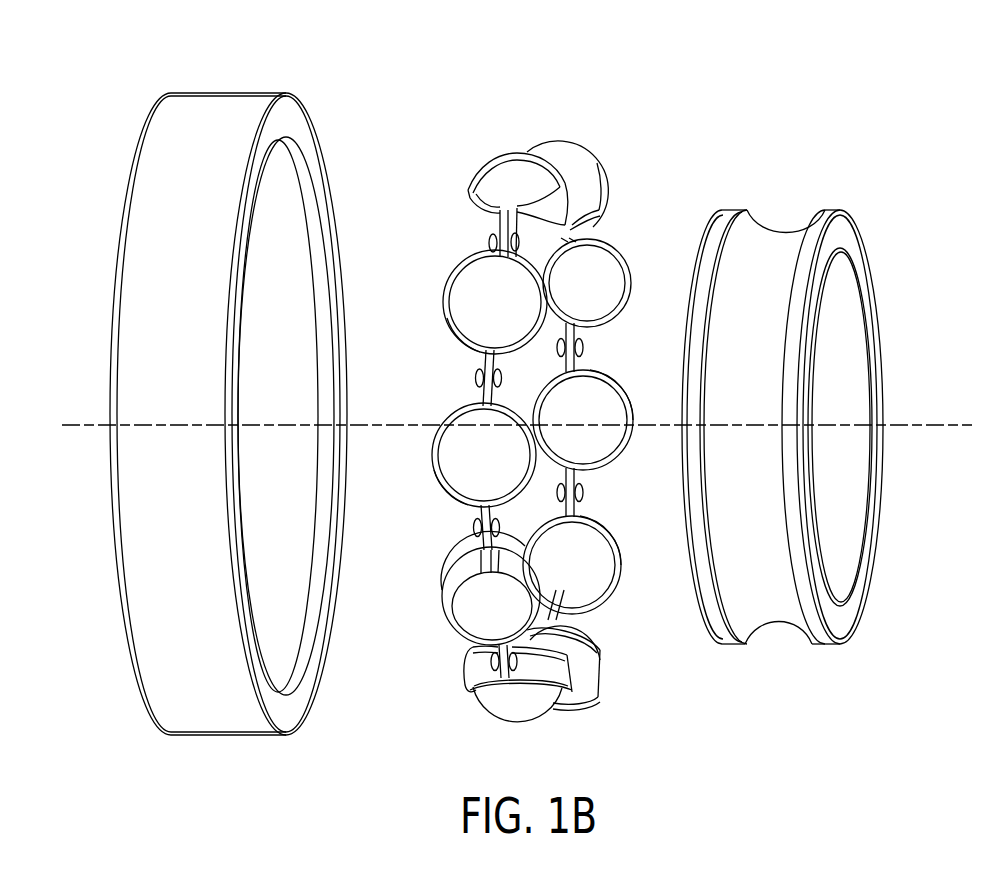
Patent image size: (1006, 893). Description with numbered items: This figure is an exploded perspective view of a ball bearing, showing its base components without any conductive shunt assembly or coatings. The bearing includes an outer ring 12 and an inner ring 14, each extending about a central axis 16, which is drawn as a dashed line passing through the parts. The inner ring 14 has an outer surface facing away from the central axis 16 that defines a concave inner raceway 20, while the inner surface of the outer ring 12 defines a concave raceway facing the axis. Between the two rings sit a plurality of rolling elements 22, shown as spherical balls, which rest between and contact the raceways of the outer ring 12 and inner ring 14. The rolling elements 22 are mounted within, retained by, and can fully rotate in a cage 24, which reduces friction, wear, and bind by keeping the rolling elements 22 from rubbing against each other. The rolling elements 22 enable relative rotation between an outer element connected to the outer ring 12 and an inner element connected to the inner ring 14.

The outer ring 12 is at (212, 112).
The inner ring 14 is at (845, 228).
The central axis 16 is at (937, 428).
The inner raceway 20 is at (283, 275).
The rolling elements 22 is at (470, 308).
The cage 24 is at (450, 491).